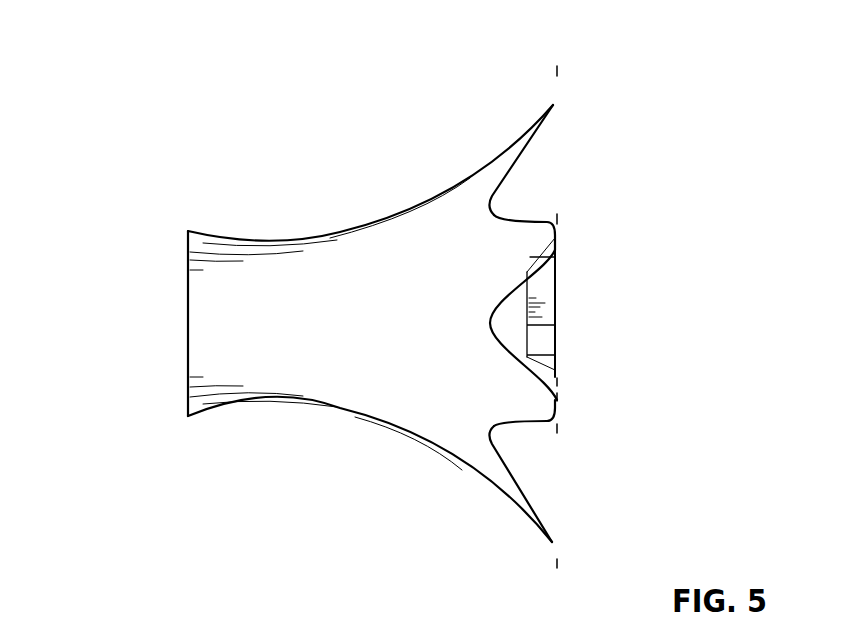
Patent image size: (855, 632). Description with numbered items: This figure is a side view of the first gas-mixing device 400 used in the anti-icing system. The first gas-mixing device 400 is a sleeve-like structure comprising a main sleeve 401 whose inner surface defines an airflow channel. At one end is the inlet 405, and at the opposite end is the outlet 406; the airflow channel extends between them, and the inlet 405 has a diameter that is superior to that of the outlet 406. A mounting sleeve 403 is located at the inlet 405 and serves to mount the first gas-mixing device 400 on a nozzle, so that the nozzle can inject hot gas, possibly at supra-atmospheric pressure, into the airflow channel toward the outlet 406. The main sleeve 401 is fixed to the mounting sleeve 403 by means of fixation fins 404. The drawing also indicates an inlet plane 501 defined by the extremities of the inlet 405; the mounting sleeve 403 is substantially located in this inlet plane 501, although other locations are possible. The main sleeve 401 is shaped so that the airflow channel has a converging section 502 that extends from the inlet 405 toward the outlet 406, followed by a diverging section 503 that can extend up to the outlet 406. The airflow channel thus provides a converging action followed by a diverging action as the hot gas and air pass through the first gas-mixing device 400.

The first gas-mixing device 400 is at (189, 58).
The main sleeve 401 is at (360, 245).
The mounting sleeve 403 is at (542, 290).
The fixation fins 404 is at (540, 203).
The inlet 405 is at (577, 337).
The outlet 406 is at (163, 328).
The inlet plane 501 is at (558, 148).
The converging section 502 is at (477, 148).
The diverging section 503 is at (235, 222).